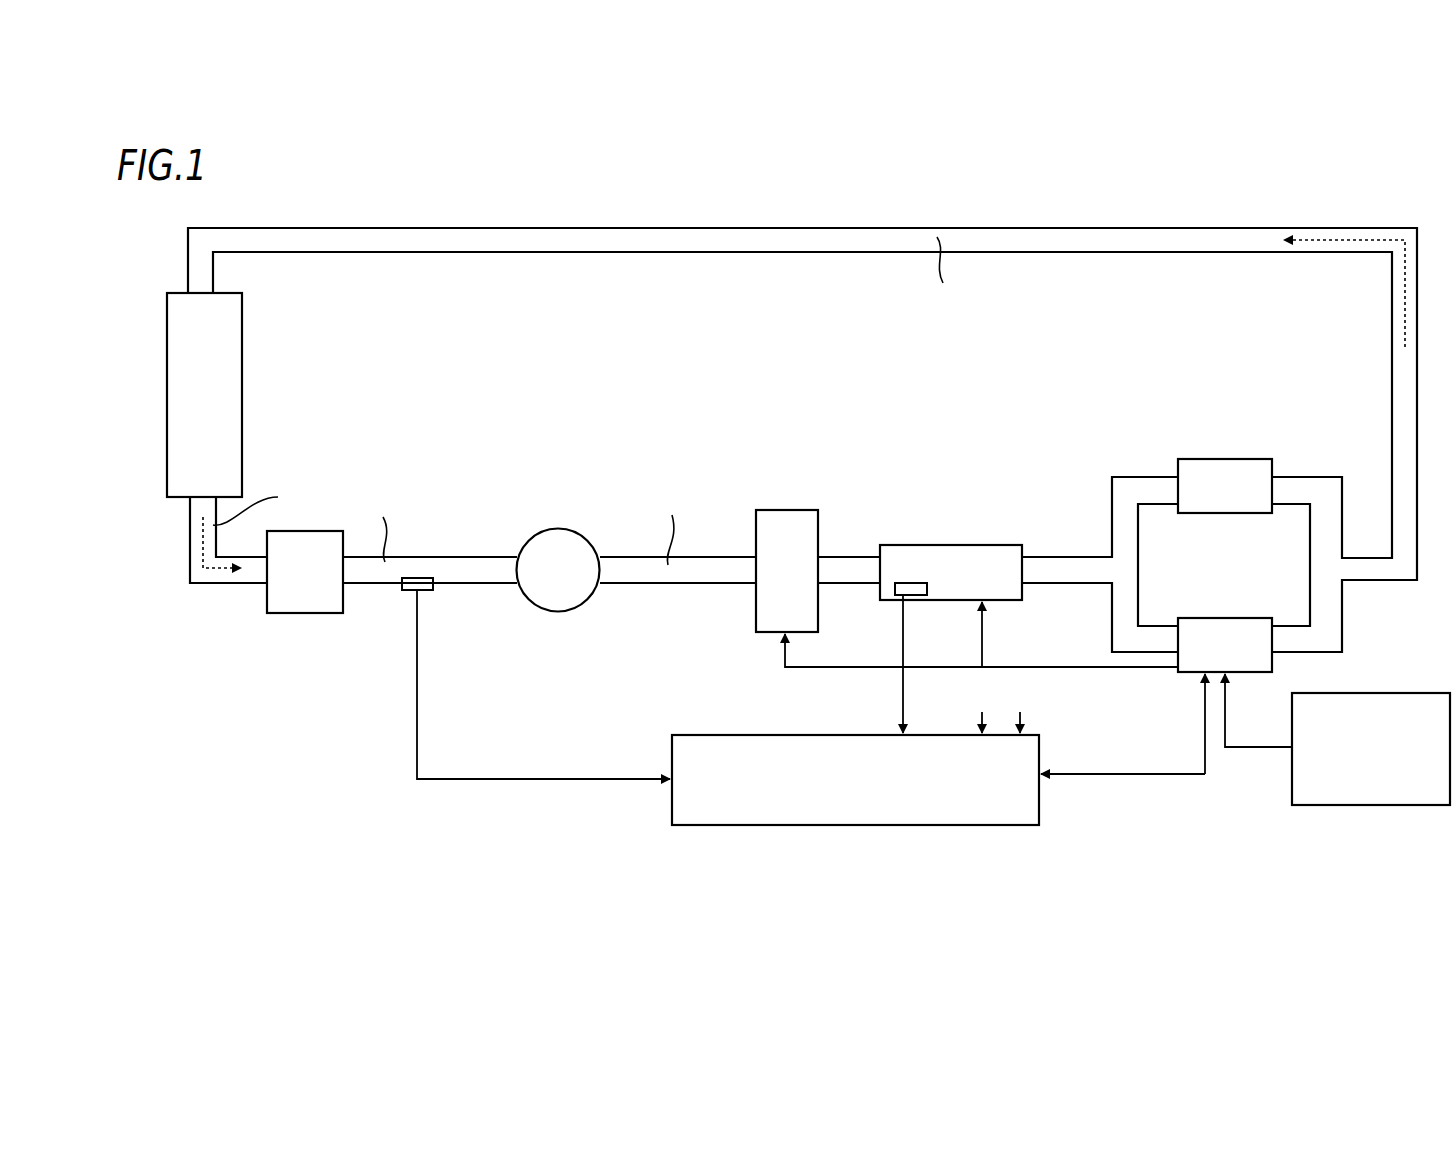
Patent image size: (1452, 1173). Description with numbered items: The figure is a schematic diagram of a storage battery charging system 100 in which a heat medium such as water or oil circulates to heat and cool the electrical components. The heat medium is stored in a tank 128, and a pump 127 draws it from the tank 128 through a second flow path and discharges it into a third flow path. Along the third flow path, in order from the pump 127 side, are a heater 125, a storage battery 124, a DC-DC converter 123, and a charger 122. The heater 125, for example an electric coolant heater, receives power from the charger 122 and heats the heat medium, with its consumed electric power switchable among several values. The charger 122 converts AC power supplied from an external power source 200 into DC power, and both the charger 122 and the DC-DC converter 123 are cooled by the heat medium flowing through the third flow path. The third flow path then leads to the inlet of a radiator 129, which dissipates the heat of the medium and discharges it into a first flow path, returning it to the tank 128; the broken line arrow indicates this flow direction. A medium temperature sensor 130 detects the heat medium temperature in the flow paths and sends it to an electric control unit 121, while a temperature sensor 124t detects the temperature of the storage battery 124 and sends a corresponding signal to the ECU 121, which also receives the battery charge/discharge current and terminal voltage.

The charging system 100 is at (1019, 203).
The electric control unit (ECU) 121 is at (772, 825).
The charger 122 is at (1252, 618).
The DC-DC converter 123 is at (1252, 459).
The storage battery (BAT) 124 is at (965, 545).
The temperature sensor 124t is at (927, 590).
The heater (HTR) 125 is at (785, 510).
The pump 127 is at (568, 611).
The tank 128 is at (307, 613).
The radiator (RAD) 129 is at (242, 342).
The medium temperature sensor 130 is at (433, 590).
The external power source 200 is at (1372, 805).